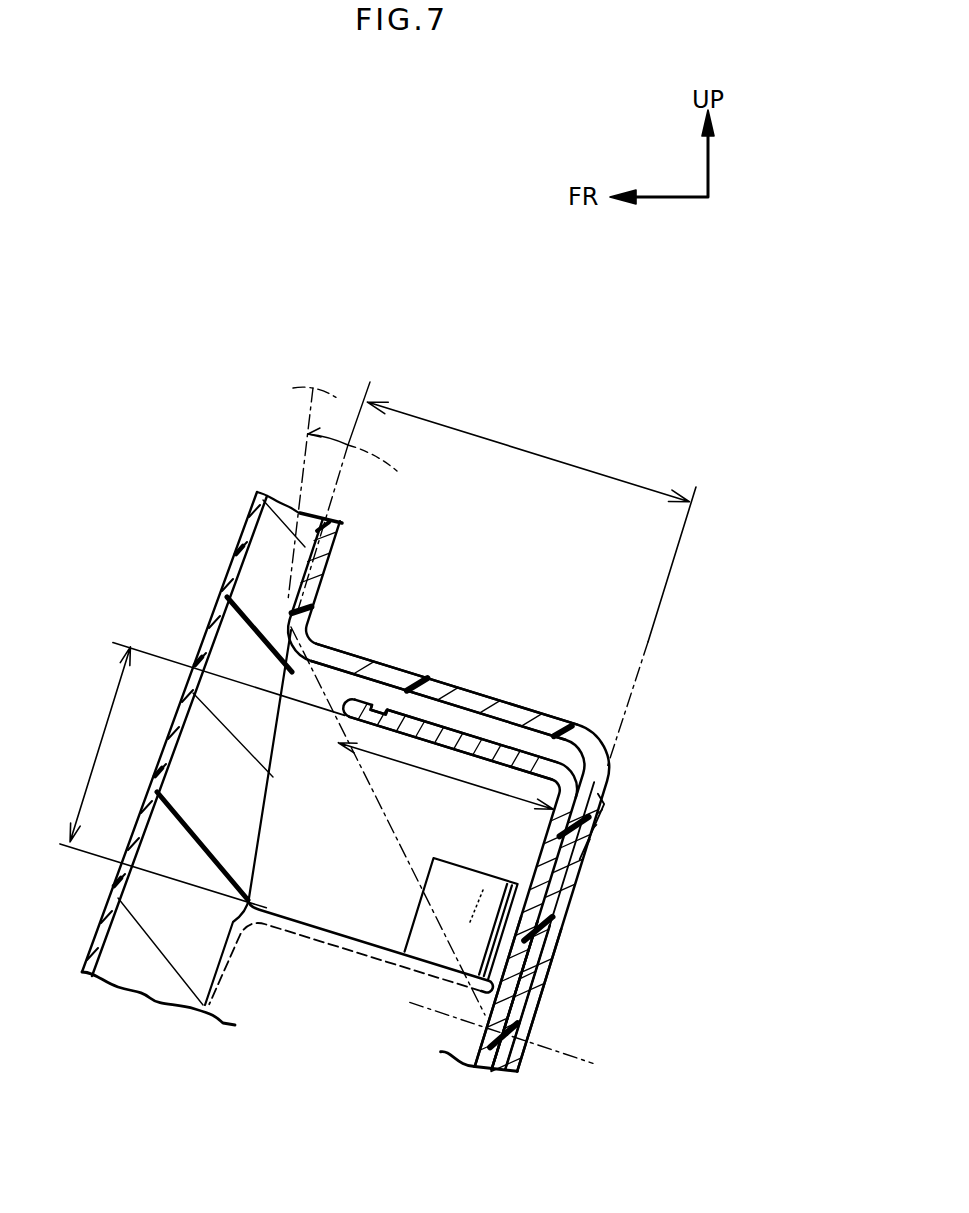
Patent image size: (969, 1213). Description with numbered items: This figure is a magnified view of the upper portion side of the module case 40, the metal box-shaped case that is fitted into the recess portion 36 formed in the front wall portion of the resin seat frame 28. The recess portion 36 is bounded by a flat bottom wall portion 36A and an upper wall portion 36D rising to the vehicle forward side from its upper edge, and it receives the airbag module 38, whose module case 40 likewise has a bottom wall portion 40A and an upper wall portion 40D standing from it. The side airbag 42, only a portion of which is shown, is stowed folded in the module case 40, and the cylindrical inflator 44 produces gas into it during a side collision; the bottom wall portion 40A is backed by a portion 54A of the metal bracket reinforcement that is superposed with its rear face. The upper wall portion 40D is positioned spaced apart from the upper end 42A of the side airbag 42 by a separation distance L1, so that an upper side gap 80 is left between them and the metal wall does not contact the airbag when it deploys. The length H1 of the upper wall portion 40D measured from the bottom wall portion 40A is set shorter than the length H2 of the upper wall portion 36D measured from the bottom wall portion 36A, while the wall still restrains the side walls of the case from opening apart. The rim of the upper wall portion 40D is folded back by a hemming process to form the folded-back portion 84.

The seat frame 28 is at (336, 544).
The recess portion 36 is at (552, 699).
The bottom wall portion 36A is at (515, 1012).
The upper wall portion 36D is at (482, 700).
The airbag module 38 is at (641, 833).
The module case 40 is at (561, 748).
The bottom wall portion 40A is at (562, 937).
The upper wall portion 40D is at (442, 721).
The side airbag 42 is at (397, 471).
The upper end 42A is at (320, 924).
The inflator 44 is at (582, 893).
The attachment portion 54A is at (548, 966).
The upper side gap 80 is at (440, 821).
The folded-back portion 84 is at (384, 702).
The length of the upper wall portion of the module case H1 is at (446, 789).
The length of the upper wall portion of the recess portion H2 is at (546, 455).
The separation distance L1 is at (95, 757).